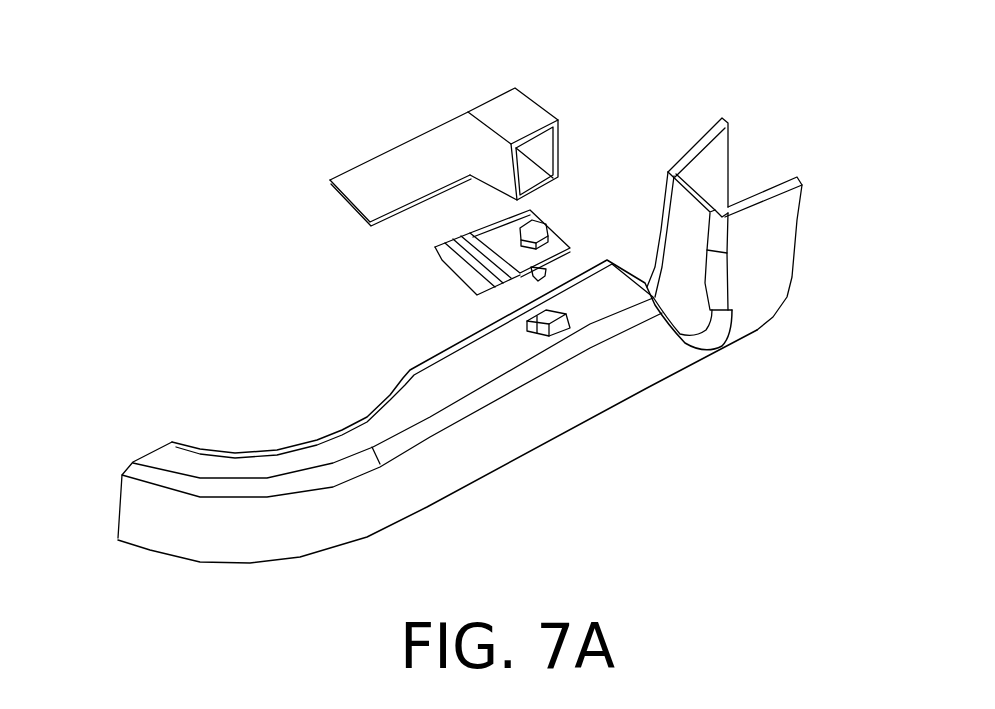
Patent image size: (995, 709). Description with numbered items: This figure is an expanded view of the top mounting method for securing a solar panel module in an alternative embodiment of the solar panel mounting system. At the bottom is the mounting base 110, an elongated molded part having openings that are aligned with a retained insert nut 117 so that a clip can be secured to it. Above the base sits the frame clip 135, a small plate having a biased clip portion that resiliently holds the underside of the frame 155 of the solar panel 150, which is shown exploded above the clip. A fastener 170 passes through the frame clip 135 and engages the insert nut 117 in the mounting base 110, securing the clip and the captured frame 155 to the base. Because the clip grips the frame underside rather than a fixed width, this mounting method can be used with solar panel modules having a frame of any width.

The mounting base 110 is at (263, 466).
The insert nut 117 is at (557, 328).
The frame clip 135 is at (492, 263).
The solar panel 150 is at (383, 173).
The frame 155 is at (493, 113).
The fastener 170 is at (538, 230).